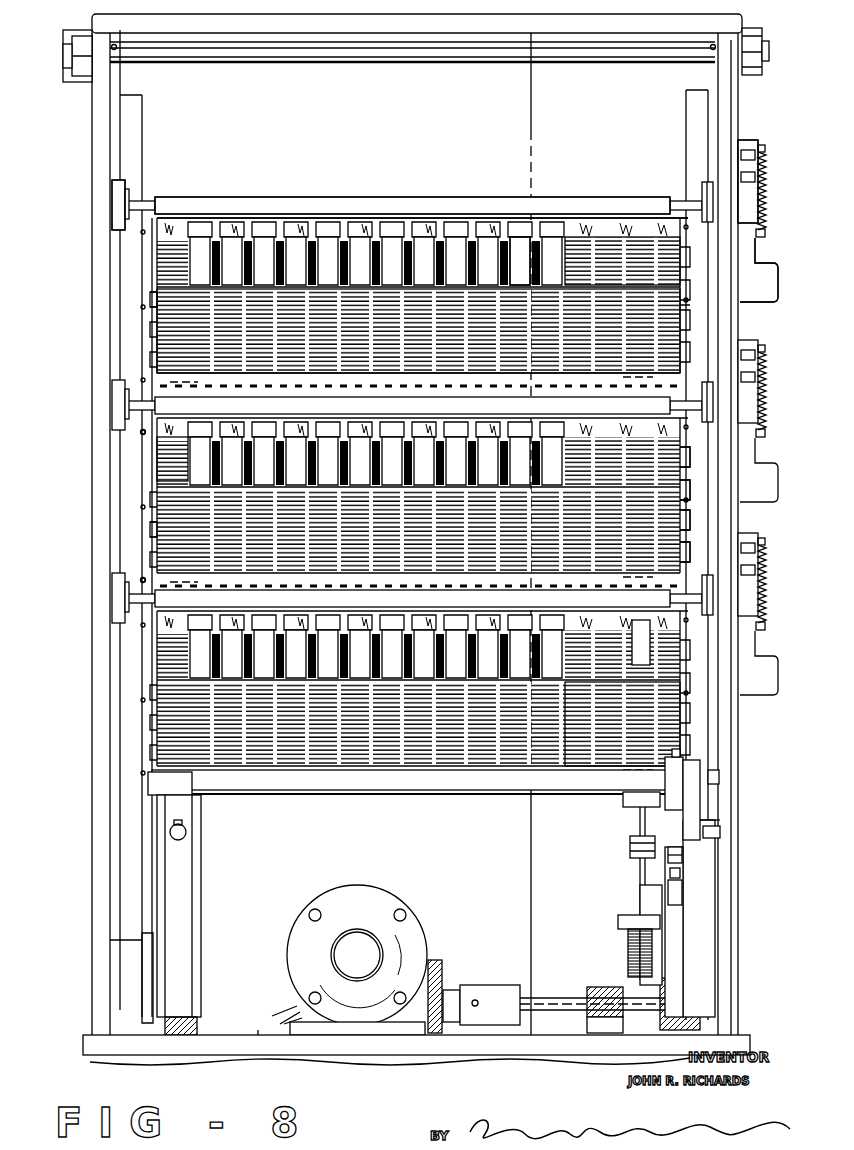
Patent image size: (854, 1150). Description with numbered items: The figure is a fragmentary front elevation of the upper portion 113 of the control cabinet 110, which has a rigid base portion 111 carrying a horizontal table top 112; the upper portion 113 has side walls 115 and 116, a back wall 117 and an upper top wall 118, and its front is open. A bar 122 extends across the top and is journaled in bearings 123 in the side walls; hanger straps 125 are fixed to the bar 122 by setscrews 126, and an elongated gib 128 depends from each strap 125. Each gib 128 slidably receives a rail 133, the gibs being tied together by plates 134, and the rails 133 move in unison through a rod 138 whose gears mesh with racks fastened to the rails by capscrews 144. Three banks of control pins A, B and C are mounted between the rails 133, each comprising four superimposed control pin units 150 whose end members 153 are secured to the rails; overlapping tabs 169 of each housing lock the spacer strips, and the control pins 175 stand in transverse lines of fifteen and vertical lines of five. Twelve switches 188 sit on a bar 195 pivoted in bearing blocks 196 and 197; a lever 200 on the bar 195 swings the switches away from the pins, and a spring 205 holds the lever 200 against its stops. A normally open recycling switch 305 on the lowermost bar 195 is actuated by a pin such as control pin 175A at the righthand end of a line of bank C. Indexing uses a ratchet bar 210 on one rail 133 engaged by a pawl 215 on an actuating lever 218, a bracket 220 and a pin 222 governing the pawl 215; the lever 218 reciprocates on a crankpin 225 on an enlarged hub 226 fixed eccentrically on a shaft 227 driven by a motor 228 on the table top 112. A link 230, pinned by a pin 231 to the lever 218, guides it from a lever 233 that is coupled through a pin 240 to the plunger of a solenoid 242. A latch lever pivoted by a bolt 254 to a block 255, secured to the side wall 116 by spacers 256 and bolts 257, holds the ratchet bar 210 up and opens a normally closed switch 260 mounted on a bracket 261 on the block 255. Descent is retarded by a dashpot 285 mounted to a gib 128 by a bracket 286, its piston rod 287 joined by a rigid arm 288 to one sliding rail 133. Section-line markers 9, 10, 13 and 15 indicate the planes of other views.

The control cabinet 110 is at (92, 232).
The rigid base portion 111 is at (88, 1066).
The horizontal table top 112 is at (258, 1033).
The upper portion of the cabinet 113 is at (90, 707).
The side wall 115 is at (92, 153).
The side wall 116 is at (738, 105).
The back wall 117 is at (471, 126).
The upper top wall 118 is at (428, 14).
The bar 122 is at (398, 63).
The bearings 123 is at (112, 77).
The hanger straps 125 is at (116, 87).
The setscrews 126 is at (114, 47).
The elongated gib 128 is at (137, 135).
The rail 133 is at (150, 262).
The plates 134 is at (610, 197).
The rod 138 is at (168, 442).
The capscrews 144 is at (143, 433).
The control pin units 150 is at (690, 540).
The end members 153 is at (150, 524).
The overlapping tabs 169 is at (567, 272).
The control pins 175 is at (455, 372).
The control pin 175A is at (640, 768).
The switches 188 is at (517, 240).
The bar 195 is at (420, 197).
The bearing block 196 is at (118, 182).
The bearing block 197 is at (712, 178).
The lever 200 is at (765, 265).
The spring 205 is at (762, 225).
The ratchet bar 210 is at (665, 822).
The pawl 215 is at (682, 852).
The actuating lever 218 is at (700, 921).
The bracket 220 is at (682, 870).
The pin 222 is at (683, 890).
The crankpin 225 is at (692, 985).
The enlarged hub 226 is at (650, 1013).
The shaft 227 is at (547, 1002).
The motor 228 is at (370, 924).
The link 230 is at (632, 856).
The pin 231 is at (630, 843).
The lever 233 is at (640, 905).
The pin 240 is at (630, 955).
The solenoid 242 is at (628, 940).
The bolt 254 is at (625, 802).
The block 255 is at (695, 810).
The spacers 256 is at (712, 821).
The bolts 257 is at (745, 775).
The normally closed switch 260 is at (713, 777).
The bracket 261 is at (705, 763).
The dashpot 285 is at (182, 868).
The bracket 286 is at (150, 955).
The piston rod 287 is at (183, 773).
The rigid arm 288 is at (185, 795).
The recycling switch 305 is at (628, 632).
The bank of control pins A is at (133, 293).
The bank of control pins B is at (143, 512).
The bank of control pins C is at (140, 660).
The section line 9- 9 is at (526, 22).
The section line 10- 10 is at (78, 352).
The section line 13- 13 is at (745, 526).
The section line 15- 15 is at (73, 766).